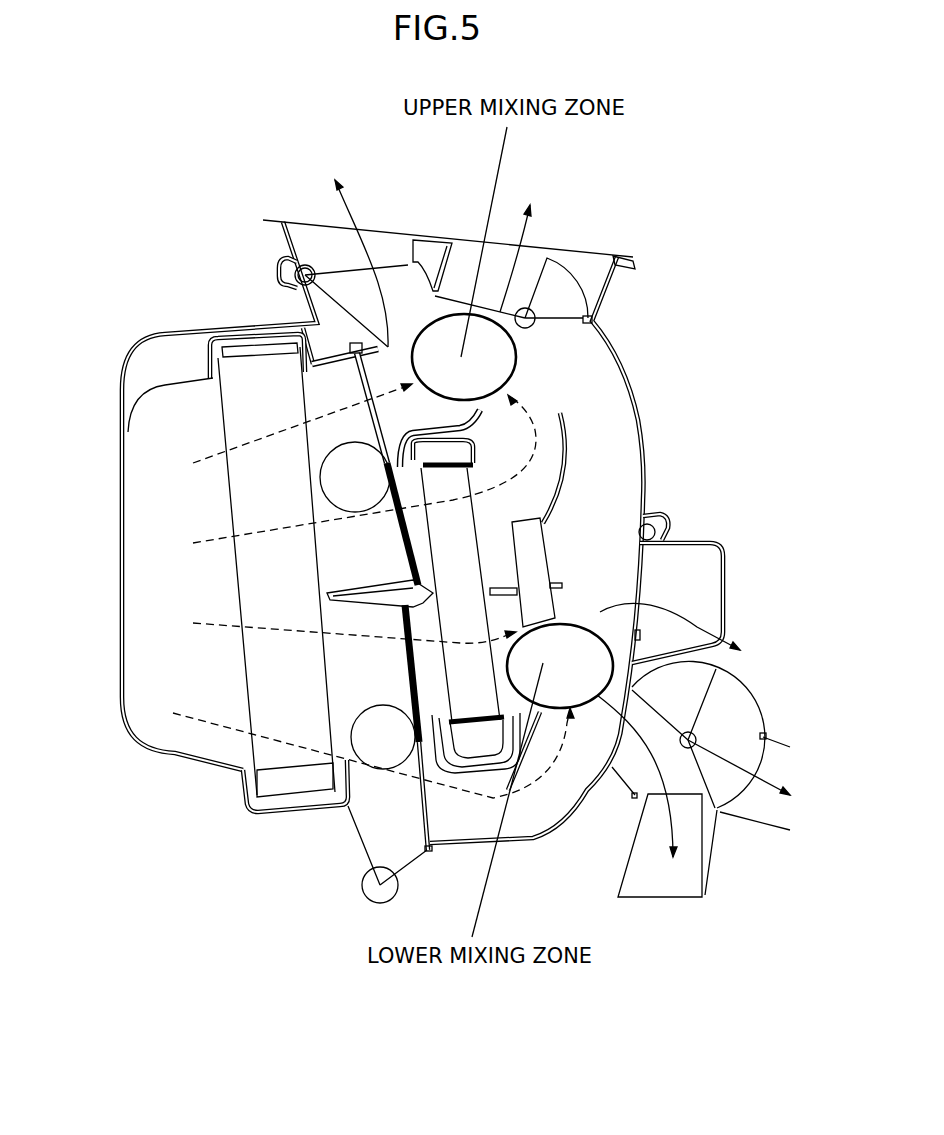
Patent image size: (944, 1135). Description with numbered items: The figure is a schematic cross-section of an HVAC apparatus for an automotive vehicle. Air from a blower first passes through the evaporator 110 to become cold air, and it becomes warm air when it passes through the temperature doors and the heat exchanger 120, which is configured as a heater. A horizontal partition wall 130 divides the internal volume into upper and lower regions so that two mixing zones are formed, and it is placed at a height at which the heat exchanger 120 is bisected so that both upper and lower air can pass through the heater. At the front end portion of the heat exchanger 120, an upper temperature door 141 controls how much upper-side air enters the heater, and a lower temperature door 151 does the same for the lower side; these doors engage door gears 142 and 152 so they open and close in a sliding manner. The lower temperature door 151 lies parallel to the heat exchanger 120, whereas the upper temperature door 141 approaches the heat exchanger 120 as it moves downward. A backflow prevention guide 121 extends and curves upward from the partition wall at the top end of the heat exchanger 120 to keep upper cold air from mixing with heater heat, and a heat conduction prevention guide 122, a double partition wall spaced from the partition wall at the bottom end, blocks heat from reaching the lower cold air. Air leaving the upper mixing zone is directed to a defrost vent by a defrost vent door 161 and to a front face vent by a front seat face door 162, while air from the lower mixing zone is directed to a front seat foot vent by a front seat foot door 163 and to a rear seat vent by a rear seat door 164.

The evaporator 110 is at (272, 577).
The heat exchanger 120 is at (453, 487).
The backflow prevention guide 121 is at (480, 410).
The heat conduction prevention guide 122 is at (533, 737).
The horizontal partition wall 130 is at (360, 603).
The upper temperature door 141 is at (388, 498).
The door gear 142 is at (335, 481).
The lower temperature door 151 is at (417, 660).
The door gear 152 is at (380, 740).
The defrost vent door 161 is at (392, 282).
The front seat face door 162 is at (562, 290).
The front seat foot door 163 is at (562, 587).
The rear seat door 164 is at (735, 745).